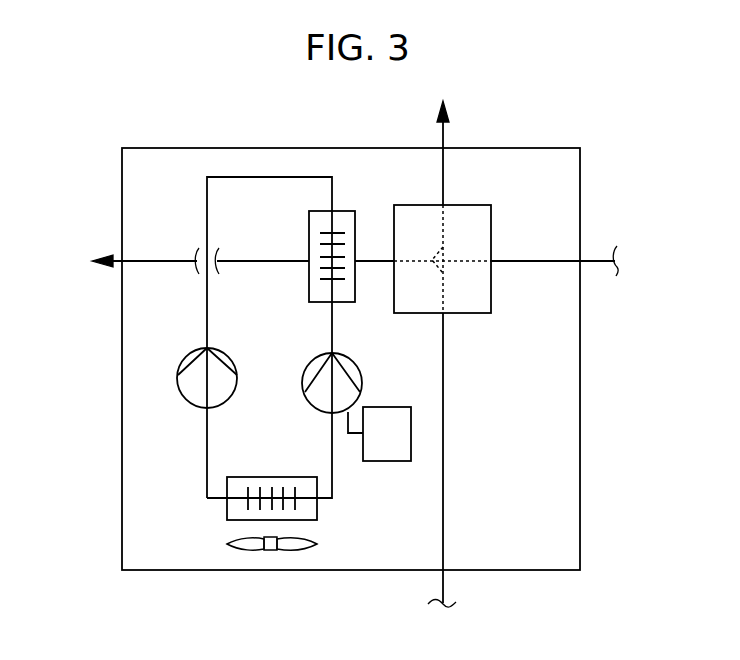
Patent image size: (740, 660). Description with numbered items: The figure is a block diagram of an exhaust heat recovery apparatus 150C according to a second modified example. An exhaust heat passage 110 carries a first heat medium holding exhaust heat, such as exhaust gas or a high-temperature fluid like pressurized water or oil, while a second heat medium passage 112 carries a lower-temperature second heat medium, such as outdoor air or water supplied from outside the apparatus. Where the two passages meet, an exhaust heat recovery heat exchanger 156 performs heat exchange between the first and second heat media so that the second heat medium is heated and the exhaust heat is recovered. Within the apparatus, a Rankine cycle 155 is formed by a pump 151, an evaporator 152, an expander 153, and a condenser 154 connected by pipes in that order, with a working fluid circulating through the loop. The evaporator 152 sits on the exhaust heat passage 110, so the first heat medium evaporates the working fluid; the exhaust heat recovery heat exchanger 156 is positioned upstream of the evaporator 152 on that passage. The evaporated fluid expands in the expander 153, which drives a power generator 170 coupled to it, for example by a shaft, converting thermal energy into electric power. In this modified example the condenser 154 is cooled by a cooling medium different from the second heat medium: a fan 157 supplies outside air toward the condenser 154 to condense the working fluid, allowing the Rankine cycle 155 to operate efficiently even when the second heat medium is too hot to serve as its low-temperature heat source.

The exhaust heat passage 110 is at (568, 261).
The second heat medium passage 112 is at (445, 558).
The exhaust heat recovery apparatus 150C is at (491, 126).
The pump 151 is at (178, 378).
The evaporator 152 is at (345, 211).
The expander 153 is at (335, 413).
The condenser 154 is at (226, 507).
The Rankine cycle 155 is at (207, 475).
The exhaust heat recovery heat exchanger 156 is at (492, 293).
The fan 157 is at (292, 548).
The power generator 170 is at (396, 461).